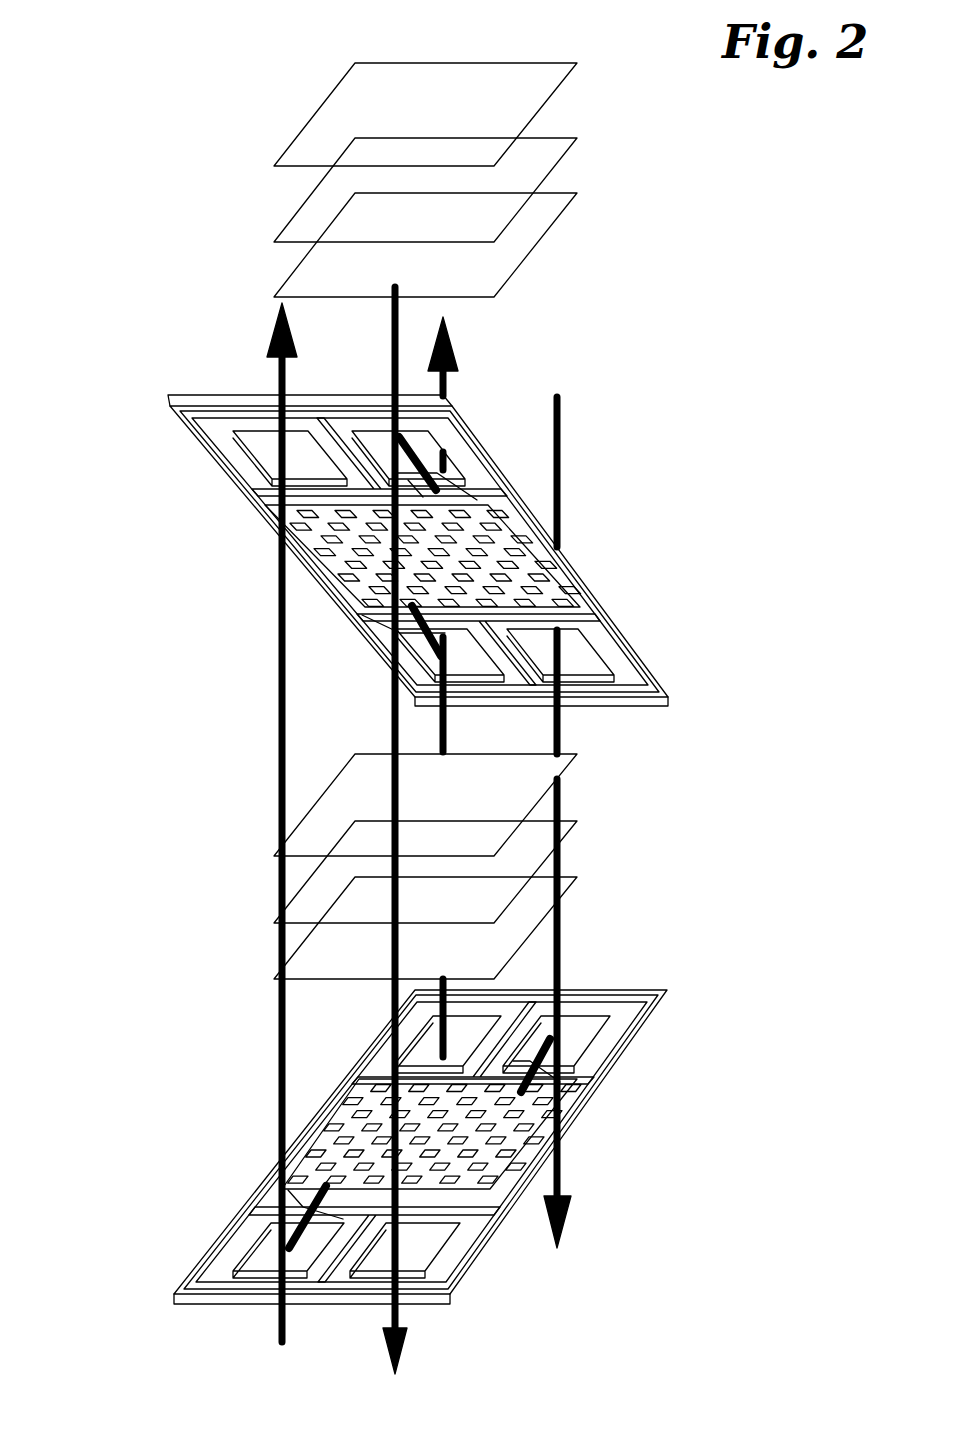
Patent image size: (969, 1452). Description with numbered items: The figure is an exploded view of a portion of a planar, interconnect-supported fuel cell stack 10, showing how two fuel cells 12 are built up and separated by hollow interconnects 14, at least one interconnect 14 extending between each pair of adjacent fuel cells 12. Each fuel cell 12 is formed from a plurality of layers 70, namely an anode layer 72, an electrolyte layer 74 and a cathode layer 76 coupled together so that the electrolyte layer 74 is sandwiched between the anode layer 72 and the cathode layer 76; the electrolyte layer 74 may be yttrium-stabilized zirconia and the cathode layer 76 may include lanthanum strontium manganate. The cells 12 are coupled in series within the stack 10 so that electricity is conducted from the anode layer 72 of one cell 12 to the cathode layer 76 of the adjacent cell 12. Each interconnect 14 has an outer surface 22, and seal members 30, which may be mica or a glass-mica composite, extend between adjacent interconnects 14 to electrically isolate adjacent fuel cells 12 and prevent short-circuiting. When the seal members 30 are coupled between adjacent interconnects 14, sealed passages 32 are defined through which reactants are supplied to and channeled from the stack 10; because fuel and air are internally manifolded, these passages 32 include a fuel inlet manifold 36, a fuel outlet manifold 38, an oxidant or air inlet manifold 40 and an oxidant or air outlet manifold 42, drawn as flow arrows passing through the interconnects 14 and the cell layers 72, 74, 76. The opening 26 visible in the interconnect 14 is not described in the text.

The fuel cell stack 10 is at (186, 88).
The fuel cell 12 is at (170, 168).
The interconnect 14 is at (672, 1002).
The outer surface 22 is at (590, 612).
The manifold opening 26 is at (478, 1027).
The seal member 30 is at (655, 705).
The sealed passage 32 is at (452, 466).
The fuel inlet manifold 36 is at (278, 697).
The fuel outlet manifold 38 is at (560, 455).
The oxidant or air inlet manifold 40 is at (447, 738).
The oxidant or air outlet manifold 42 is at (392, 347).
The layers 70 is at (135, 296).
The anode layer 72 is at (274, 297).
The electrolyte layer 74 is at (300, 207).
The cathode layer 76 is at (288, 167).